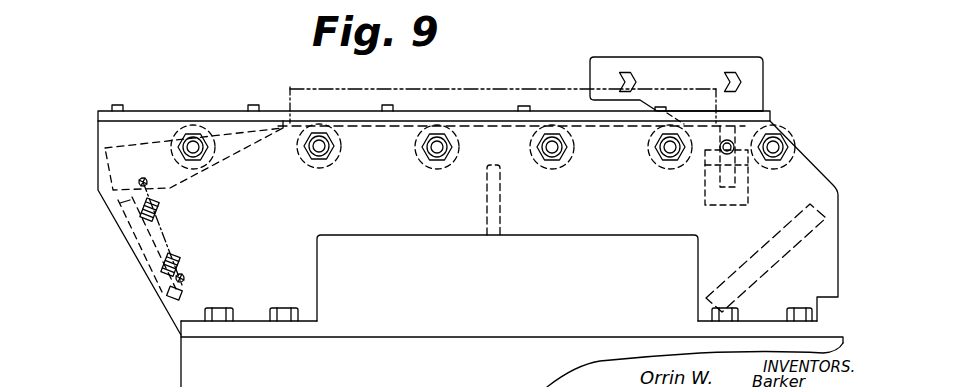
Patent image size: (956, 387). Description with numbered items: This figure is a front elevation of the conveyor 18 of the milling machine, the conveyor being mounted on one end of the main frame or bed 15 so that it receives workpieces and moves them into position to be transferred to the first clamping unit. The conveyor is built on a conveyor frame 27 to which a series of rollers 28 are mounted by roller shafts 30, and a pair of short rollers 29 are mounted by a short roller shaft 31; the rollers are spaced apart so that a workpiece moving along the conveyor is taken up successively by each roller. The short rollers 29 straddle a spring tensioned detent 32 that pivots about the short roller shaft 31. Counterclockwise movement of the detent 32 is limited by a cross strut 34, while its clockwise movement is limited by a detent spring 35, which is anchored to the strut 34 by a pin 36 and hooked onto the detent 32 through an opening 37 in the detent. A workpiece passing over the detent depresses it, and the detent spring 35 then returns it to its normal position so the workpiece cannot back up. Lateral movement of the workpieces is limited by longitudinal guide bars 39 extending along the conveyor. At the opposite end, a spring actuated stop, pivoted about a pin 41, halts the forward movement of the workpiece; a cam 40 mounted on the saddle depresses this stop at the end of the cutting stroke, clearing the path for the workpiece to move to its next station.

The main frame or bed 15 is at (197, 367).
The conveyor 18 is at (535, 84).
The conveyor frame 27 is at (806, 157).
The rollers 28 is at (313, 167).
The short rollers 29 is at (185, 118).
The roller shafts 30 is at (437, 150).
The short roller shaft 31 is at (188, 147).
The spring tensioned detent 32 is at (267, 110).
The cross strut 34 is at (143, 240).
The detent spring 35 is at (172, 225).
The pin 36 is at (193, 277).
The opening 37 is at (160, 183).
The longitudinal guide bars 39 is at (414, 117).
The cam 40 is at (653, 108).
The pin 41 is at (705, 167).